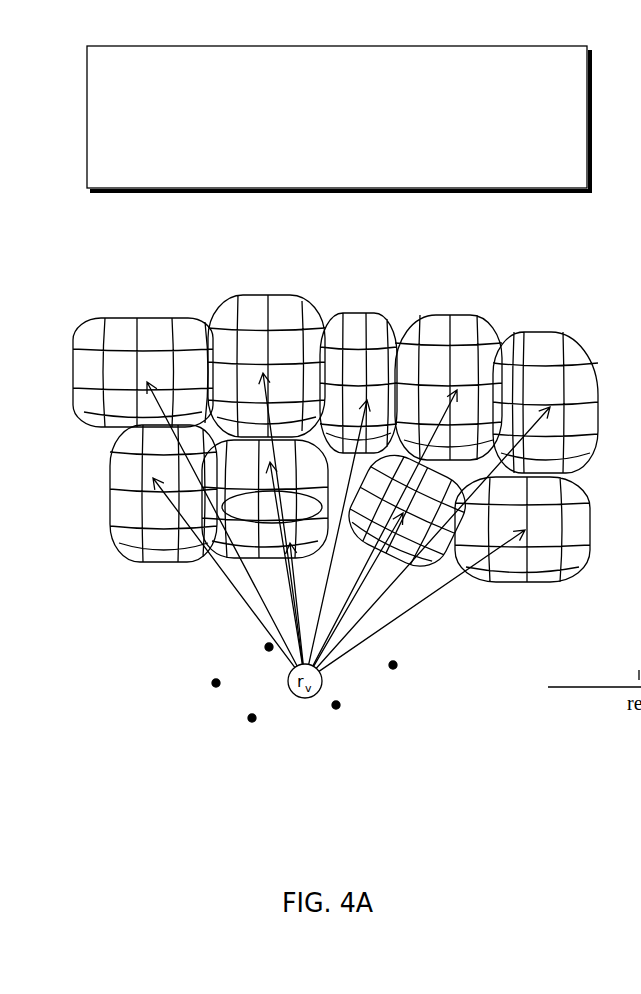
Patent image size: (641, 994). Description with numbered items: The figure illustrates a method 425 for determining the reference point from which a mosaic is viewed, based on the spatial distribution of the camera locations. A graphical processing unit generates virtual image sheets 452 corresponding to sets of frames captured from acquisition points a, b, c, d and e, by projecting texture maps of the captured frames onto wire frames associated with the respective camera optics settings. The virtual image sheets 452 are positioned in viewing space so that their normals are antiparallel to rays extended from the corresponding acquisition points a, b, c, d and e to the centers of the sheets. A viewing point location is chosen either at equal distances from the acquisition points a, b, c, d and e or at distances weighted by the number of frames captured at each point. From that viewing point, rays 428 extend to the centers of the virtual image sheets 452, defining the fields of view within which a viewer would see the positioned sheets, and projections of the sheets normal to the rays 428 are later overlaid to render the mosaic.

The method for determining a viewing point 425 is at (318, 172).
The virtual image sheets 452 is at (177, 289).
The rays 428 is at (425, 603).
The acquisition point a is at (216, 685).
The acquisition point b is at (267, 648).
The acquisition point c is at (337, 707).
The acquisition point d is at (394, 667).
The acquisition point e is at (252, 722).